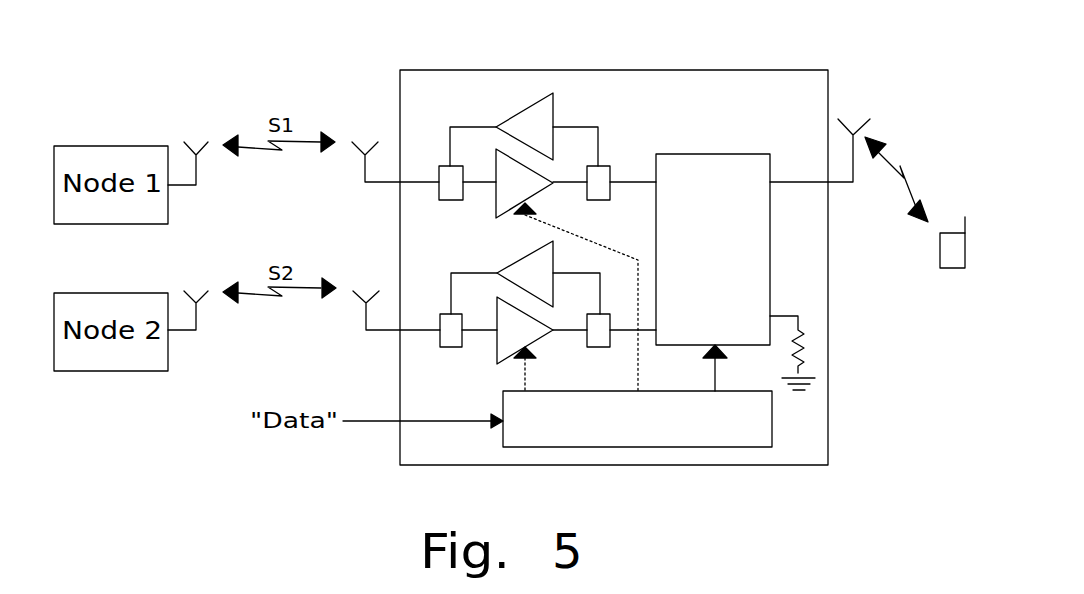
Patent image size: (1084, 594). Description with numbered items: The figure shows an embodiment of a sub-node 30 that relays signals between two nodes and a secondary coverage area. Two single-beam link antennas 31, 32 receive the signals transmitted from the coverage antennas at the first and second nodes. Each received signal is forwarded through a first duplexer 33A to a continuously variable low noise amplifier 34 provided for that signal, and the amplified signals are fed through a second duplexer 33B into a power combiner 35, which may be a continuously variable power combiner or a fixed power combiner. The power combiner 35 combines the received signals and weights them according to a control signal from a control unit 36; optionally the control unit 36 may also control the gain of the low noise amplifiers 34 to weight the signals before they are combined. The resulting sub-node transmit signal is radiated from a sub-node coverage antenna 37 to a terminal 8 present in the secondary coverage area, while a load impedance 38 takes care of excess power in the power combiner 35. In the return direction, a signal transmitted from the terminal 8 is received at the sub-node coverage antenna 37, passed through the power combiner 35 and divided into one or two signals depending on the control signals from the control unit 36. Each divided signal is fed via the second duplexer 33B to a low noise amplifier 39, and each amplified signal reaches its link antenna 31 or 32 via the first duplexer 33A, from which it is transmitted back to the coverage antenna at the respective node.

The sub-node 30 is at (642, 88).
The single-beam link antenna 31 is at (394, 177).
The single-beam link antenna 32 is at (395, 324).
The first duplexer 33A is at (446, 276).
The second duplexer 33B is at (597, 276).
The continuously variable low noise amplifier 34 is at (559, 270).
The power combiner 35 is at (717, 177).
The control unit 36 is at (722, 430).
The sub-node coverage antenna 37 is at (821, 163).
The load impedance 38 is at (814, 353).
The low noise amplifier 39 is at (525, 203).
The terminal 8 is at (915, 210).